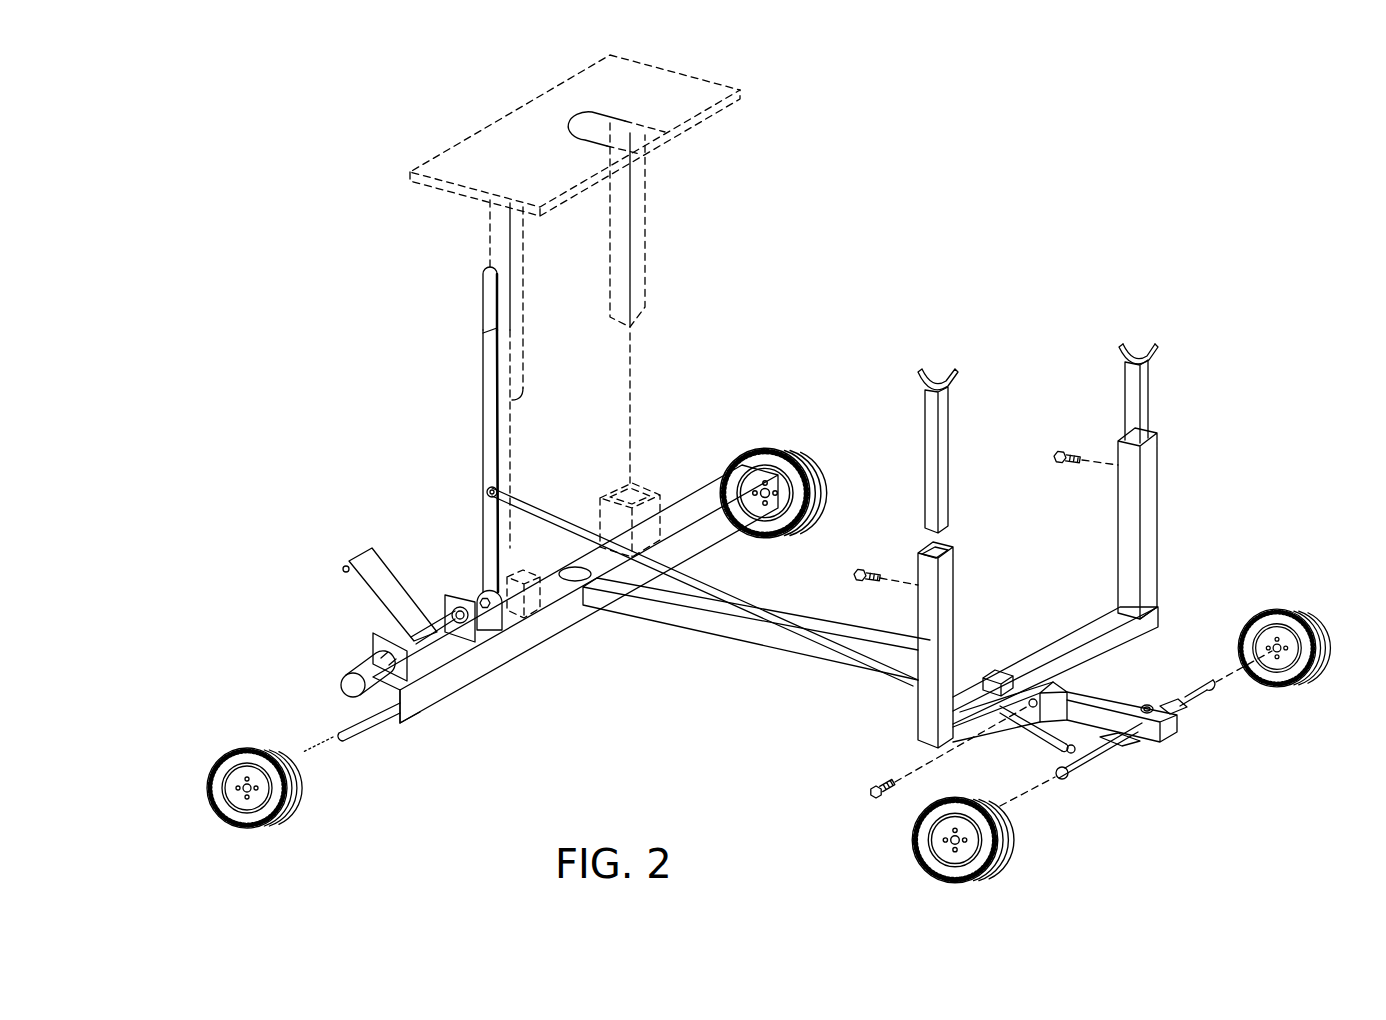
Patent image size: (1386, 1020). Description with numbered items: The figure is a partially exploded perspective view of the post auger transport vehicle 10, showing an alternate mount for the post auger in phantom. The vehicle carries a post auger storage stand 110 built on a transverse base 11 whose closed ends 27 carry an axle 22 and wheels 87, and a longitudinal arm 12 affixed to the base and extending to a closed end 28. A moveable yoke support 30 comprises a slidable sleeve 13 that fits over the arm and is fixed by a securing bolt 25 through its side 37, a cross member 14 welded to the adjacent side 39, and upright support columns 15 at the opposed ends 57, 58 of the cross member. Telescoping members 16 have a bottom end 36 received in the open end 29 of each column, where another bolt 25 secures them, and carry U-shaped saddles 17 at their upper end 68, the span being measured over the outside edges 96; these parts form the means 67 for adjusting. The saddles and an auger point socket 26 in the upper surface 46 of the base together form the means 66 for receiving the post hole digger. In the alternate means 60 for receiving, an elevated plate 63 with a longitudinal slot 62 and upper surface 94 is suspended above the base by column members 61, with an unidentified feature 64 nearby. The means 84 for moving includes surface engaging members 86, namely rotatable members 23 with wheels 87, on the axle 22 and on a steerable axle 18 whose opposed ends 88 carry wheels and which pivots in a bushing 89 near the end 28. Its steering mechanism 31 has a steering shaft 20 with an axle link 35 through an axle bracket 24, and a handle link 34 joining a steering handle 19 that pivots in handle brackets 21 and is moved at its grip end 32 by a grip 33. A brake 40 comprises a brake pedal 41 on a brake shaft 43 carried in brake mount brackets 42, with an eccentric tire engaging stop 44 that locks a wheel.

The post auger transport vehicle 10 is at (1148, 222).
The transverse base 11 is at (690, 548).
The longitudinal arm 12 is at (680, 617).
The slidable sleeve 13 is at (1066, 688).
The cross member 14 is at (1100, 627).
The upright support columns 15 is at (1150, 462).
The telescoping members 16 is at (1143, 398).
The yoke receiving saddles 17 is at (1150, 349).
The steerable axle 18 is at (1083, 763).
The steering handle 19 is at (500, 395).
The steering shaft 20 is at (787, 620).
The handle bracket 21 is at (506, 634).
The axle 22 is at (352, 727).
The rotatable member 23 is at (263, 800).
The axle bracket 24 is at (1060, 757).
The securing bolt 25 is at (1062, 448).
The auger point socket 26 is at (576, 582).
The closed end 27 is at (393, 720).
The end of longitudinal arm 28 is at (1170, 728).
The open end 29 is at (935, 548).
The moveable yoke support 30 is at (1298, 570).
The steering mechanism 31 is at (1208, 843).
The grip end 32 is at (486, 268).
The grip 33 is at (486, 312).
The handle link 34 is at (487, 488).
The axle link 35 is at (1085, 757).
The bottom end 36 is at (942, 530).
The side of slidable sleeve 37 is at (1010, 672).
The side of slidable sleeve 39 is at (1067, 680).
The brake 40 is at (240, 657).
The brake pedal 41 is at (355, 560).
The brake mount bracket 42 is at (450, 594).
The brake shaft 43 is at (432, 640).
The tire engaging stop 44 is at (362, 665).
The upper surface 46 is at (698, 497).
The end of cross member 57 is at (927, 720).
The end of cross member 58 is at (1150, 600).
The means for receiving head 60 is at (860, 120).
The column members 61 is at (640, 203).
The longitudinal slot 62 is at (593, 140).
The elevated plate 63 is at (705, 92).
The support leg 64 is at (513, 401).
The means for receiving post hole digger 66 is at (920, 276).
The means for adjusting 67 is at (1290, 366).
The upper end 68 is at (1152, 358).
The means for moving 84 is at (1312, 795).
The surface engaging member 86 is at (197, 811).
The wheel 87 is at (252, 826).
The opposed ends of axle 88 is at (1212, 684).
The bushing 89 is at (1168, 710).
The upper surface of elevated plate 94 is at (521, 177).
The outside edges 96 is at (922, 377).
The post auger storage stand 110 is at (1275, 478).